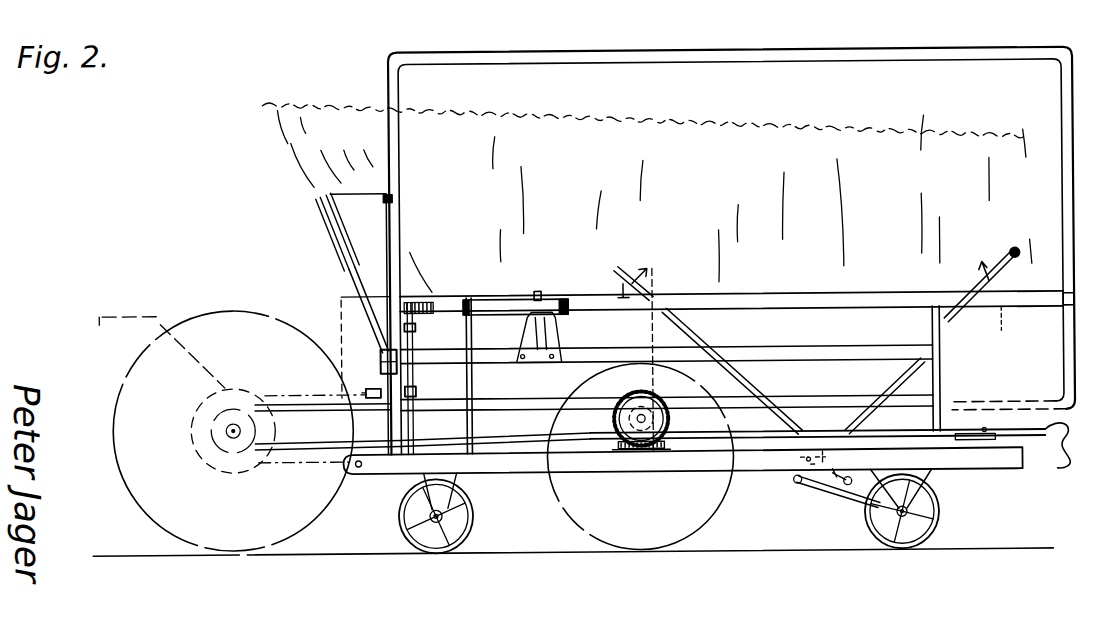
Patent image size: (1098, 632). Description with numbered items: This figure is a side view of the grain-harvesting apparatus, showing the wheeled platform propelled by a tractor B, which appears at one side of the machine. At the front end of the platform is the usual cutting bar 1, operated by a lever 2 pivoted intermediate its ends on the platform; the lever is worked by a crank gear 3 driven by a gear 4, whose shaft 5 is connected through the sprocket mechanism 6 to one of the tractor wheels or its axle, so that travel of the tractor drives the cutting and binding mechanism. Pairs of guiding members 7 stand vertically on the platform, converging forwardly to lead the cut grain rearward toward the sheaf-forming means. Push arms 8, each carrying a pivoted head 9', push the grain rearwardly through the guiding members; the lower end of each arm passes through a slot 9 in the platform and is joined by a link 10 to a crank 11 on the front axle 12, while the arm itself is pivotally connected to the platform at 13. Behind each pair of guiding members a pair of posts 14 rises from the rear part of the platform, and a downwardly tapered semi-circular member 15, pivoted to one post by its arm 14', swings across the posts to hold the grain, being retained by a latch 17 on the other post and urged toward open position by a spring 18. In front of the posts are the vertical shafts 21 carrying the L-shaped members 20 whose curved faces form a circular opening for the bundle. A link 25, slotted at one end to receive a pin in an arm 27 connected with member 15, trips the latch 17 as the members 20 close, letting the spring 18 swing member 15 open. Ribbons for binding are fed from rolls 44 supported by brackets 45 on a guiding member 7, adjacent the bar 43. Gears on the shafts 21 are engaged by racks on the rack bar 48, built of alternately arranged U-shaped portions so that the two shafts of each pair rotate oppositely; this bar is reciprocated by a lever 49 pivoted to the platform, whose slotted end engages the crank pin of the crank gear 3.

The cutting bar 1 is at (1058, 447).
The lever 2 is at (959, 439).
The crank gear 3 is at (624, 451).
The gear 4 is at (651, 397).
The shaft 5 is at (616, 393).
The sprocket mechanism 6 is at (293, 450).
The guiding members 7 is at (745, 300).
The push arms 8 is at (697, 333).
The slot 9 is at (1003, 329).
The pivoted head 9' is at (816, 255).
The link 10 is at (832, 498).
The crank 11 is at (874, 525).
The front axle 12 is at (911, 540).
The pivotal connection 13 is at (822, 474).
The posts 14 is at (322, 329).
The arm 14' is at (355, 299).
The semi-circular member 15 is at (317, 194).
The latch 17 is at (395, 193).
The spring 18 is at (397, 368).
The L-shaped members 20 is at (442, 297).
The vertical shafts 21 is at (410, 366).
The link 25 is at (352, 392).
The arm 27 is at (383, 364).
The bar 43 is at (494, 299).
The rolls 44 is at (547, 299).
The brackets 45 is at (556, 335).
The rack bar 48 is at (395, 475).
The lever 49 is at (524, 442).
The tractor B is at (122, 388).